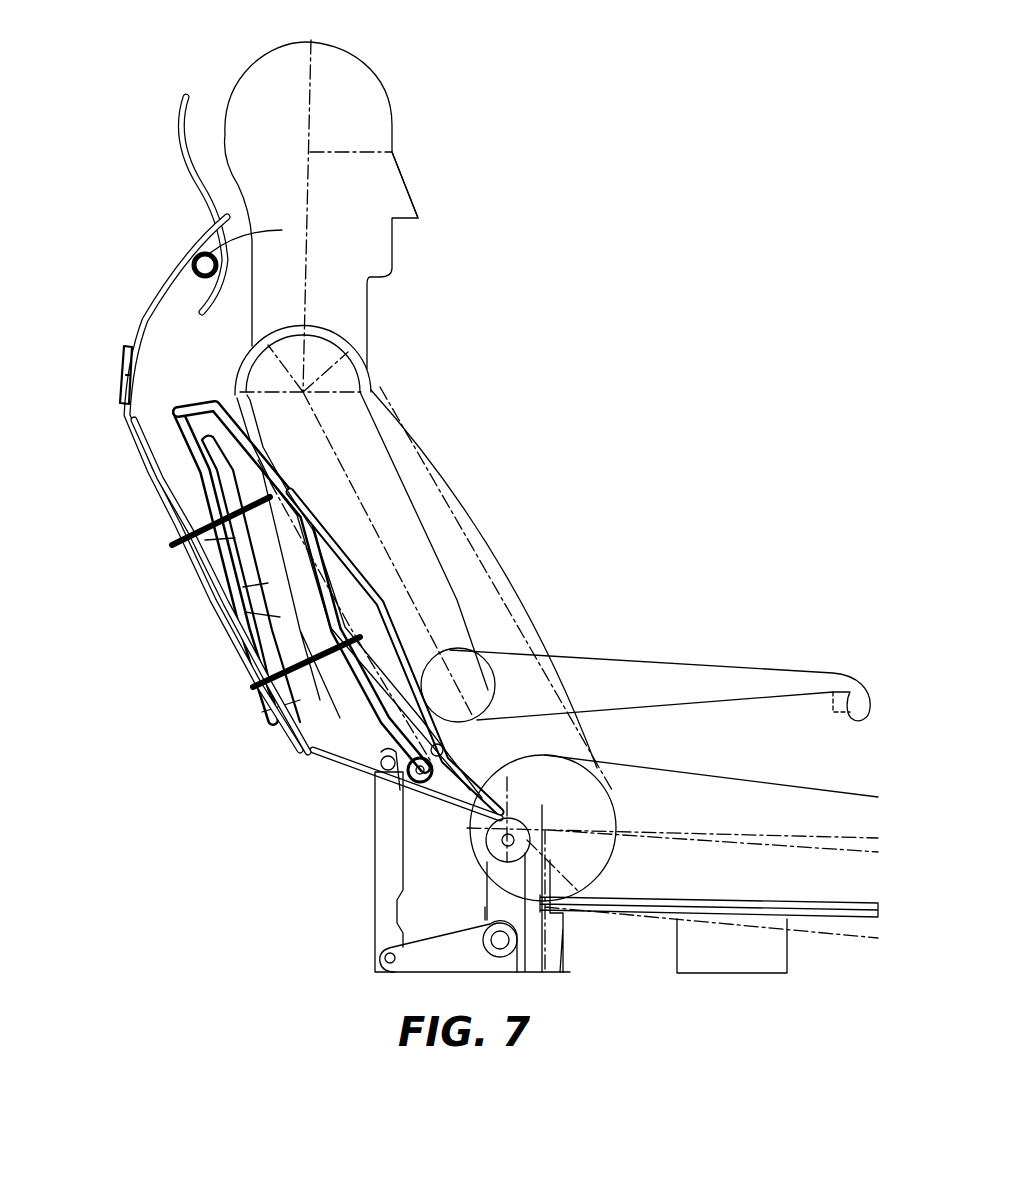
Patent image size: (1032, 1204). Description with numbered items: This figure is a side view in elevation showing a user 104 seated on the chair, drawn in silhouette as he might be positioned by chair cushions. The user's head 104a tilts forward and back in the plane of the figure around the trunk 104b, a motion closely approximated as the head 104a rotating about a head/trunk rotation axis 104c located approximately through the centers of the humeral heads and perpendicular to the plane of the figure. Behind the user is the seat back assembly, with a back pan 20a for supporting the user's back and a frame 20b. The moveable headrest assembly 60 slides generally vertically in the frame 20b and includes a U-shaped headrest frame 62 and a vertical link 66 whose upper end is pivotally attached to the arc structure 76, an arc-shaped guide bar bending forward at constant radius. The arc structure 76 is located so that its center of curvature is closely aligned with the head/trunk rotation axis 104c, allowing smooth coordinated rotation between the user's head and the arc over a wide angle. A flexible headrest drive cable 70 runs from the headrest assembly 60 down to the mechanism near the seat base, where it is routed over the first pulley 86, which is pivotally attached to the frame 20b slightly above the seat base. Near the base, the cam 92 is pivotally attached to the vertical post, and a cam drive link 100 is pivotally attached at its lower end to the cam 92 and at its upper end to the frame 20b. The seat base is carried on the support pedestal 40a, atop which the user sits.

The moveable headrest assembly 60 is at (185, 97).
The U-shaped headrest frame 62 is at (122, 356).
The vertical link 66 is at (140, 474).
The arc structure 76 is at (148, 306).
The back pan 20a is at (277, 613).
The frame 20b is at (175, 543).
The cam drive link 100 is at (385, 875).
The first pulley 86 is at (505, 847).
The cam 92 is at (447, 962).
The flexible headrest drive cable 70 is at (566, 952).
The support pedestal 40a is at (752, 974).
The user 104 is at (395, 108).
The head 104a is at (407, 176).
The trunk 104b is at (508, 584).
The head/trunk rotation axis 104c is at (335, 351).